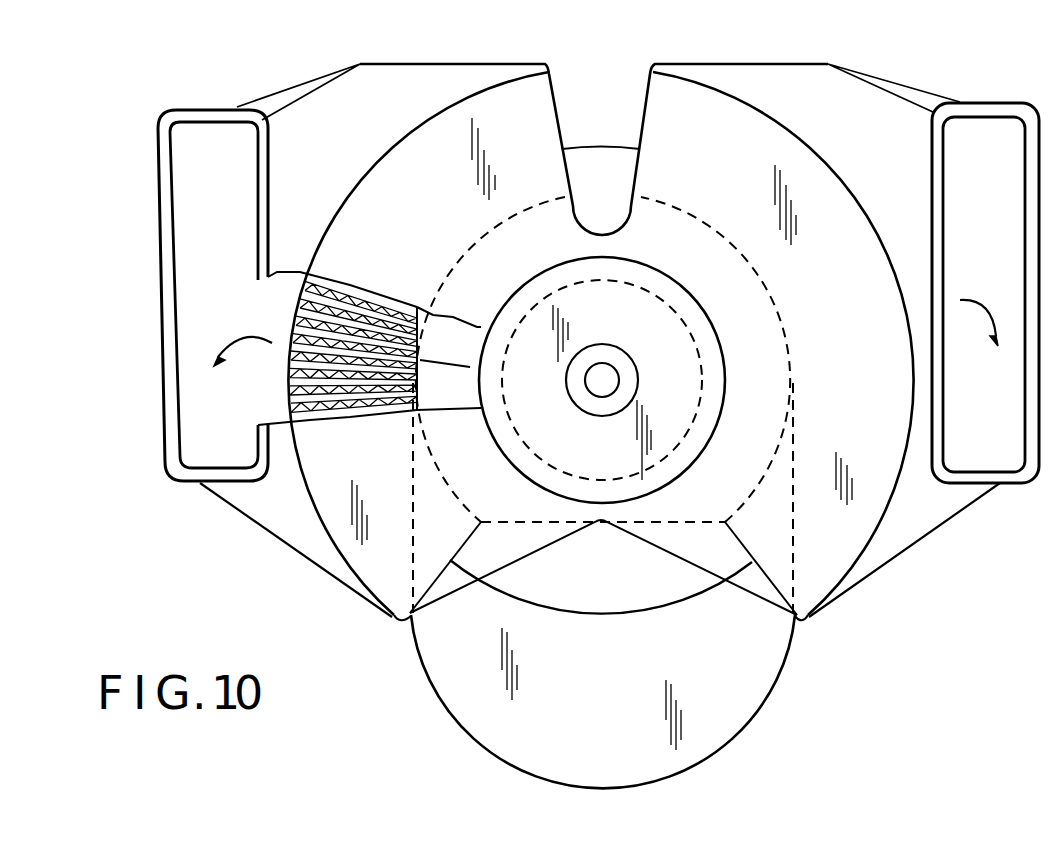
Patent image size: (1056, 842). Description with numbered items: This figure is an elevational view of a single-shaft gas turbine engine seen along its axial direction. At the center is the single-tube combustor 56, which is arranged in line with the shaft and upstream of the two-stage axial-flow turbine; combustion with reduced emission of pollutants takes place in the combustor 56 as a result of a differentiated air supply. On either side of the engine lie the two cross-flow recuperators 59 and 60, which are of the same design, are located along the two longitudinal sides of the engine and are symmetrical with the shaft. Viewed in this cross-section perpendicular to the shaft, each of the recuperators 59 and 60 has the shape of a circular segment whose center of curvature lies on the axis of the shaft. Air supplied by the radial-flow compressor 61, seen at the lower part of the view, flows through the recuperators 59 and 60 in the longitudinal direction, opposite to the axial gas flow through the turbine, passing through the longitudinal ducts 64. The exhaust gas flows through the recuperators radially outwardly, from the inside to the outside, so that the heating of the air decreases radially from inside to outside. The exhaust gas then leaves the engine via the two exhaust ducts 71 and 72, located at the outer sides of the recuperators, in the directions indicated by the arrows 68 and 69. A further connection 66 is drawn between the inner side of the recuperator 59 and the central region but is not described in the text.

The single-tube combustor 56 is at (694, 418).
The cross-flow recuperator 59 is at (422, 248).
The cross-flow recuperator 60 is at (853, 322).
The radial-flow compressor 61 is at (678, 605).
The longitudinal ducts 64 is at (317, 388).
The connector 66 is at (443, 360).
The arrow 68 is at (240, 340).
The arrow 69 is at (968, 300).
The exhaust duct 71 is at (193, 147).
The exhaust duct 72 is at (993, 130).